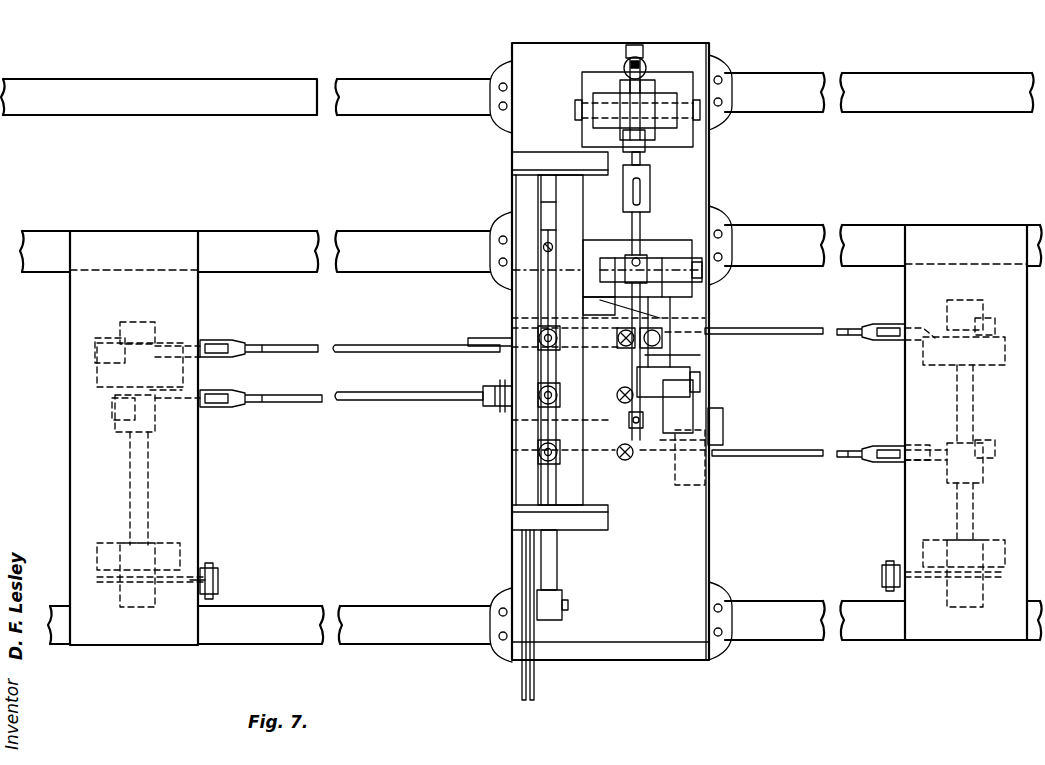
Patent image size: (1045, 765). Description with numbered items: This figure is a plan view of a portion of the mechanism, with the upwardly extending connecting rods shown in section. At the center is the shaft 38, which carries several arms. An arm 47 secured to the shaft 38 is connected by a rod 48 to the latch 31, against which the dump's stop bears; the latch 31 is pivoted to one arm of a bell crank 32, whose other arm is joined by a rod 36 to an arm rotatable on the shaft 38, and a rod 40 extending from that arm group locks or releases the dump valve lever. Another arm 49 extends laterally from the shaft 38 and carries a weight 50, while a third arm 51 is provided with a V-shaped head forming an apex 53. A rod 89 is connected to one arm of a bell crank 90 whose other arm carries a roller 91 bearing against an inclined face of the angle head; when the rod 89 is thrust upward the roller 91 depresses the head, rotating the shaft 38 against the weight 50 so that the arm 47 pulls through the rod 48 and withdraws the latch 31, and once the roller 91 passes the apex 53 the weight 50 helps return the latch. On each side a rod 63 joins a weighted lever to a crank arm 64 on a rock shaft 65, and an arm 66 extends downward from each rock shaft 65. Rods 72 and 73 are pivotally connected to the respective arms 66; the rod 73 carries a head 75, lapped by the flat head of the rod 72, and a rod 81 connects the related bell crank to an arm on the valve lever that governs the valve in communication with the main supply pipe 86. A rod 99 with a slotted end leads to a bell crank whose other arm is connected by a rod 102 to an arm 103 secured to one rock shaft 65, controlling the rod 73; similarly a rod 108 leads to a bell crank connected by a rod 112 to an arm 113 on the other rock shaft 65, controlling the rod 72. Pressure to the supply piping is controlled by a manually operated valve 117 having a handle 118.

The latch 31 is at (636, 45).
The rod 48 is at (640, 66).
The bell crank 32 is at (630, 88).
The rod 36 is at (623, 143).
The arm 49 is at (640, 159).
The weight 50 is at (650, 183).
The rod 40 is at (548, 247).
The arm 47 is at (638, 275).
The shaft 38 is at (700, 270).
The third arm 51 is at (655, 328).
The rod 89 is at (660, 338).
The bell crank 90 is at (660, 350).
The apex 53 is at (690, 375).
The rod 72 is at (812, 338).
The rod 81 is at (620, 344).
The rod 99 is at (618, 398).
The rod 73 is at (393, 345).
The head 75 is at (484, 338).
The rod 102 is at (378, 402).
The arm 103 is at (112, 415).
The rock shaft 65 is at (148, 496).
The crank arm 64 is at (218, 572).
The rod 63 is at (218, 585).
The arm 66 is at (990, 320).
The arm 113 is at (990, 442).
The rod 112 is at (775, 458).
The rod 108 is at (624, 460).
The roller 91 is at (640, 430).
The main supply pipe 86 is at (557, 562).
The manually operated valve 117 is at (568, 600).
The handle 118 is at (534, 690).